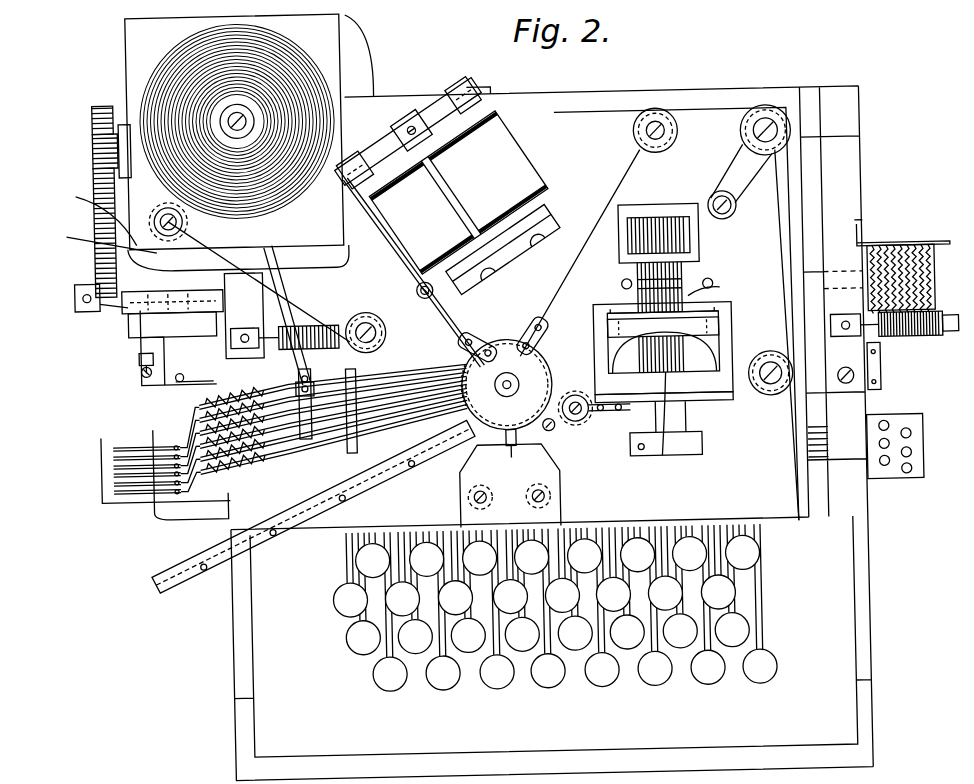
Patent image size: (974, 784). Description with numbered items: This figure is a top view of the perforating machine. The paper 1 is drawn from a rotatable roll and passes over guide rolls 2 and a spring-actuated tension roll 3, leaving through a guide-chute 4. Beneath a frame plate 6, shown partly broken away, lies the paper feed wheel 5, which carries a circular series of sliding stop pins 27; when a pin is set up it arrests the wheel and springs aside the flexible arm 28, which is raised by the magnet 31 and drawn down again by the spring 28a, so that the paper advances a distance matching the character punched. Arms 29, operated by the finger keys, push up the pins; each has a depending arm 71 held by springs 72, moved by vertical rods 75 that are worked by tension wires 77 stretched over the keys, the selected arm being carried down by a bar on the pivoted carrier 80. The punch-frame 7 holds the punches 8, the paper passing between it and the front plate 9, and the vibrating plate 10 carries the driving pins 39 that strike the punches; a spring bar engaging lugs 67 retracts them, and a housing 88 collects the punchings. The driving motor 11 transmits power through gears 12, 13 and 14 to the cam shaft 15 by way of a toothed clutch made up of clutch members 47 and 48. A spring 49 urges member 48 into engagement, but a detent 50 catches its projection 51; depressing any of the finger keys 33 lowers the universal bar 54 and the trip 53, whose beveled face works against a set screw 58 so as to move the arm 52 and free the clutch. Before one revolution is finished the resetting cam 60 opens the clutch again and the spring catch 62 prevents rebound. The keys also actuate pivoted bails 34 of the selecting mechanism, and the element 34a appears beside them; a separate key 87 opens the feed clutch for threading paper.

The paper 1 is at (292, 56).
The guide rolls 2 is at (186, 216).
The spring-actuated tension roll 3 is at (746, 136).
The guide-chute 4 is at (278, 526).
The paper feed wheel 5 is at (517, 444).
The frame plate 6 is at (503, 372).
The punch-frame 7 is at (722, 338).
The punches 8 is at (720, 281).
The front plate 9 is at (720, 405).
The vibrating plate 10 is at (702, 256).
The driving motor 11 is at (128, 118).
The gear 12 is at (98, 142).
The gear 13 is at (98, 108).
The gear 14 is at (80, 303).
The cam shaft 15 is at (310, 258).
The sliding stop pins 27 is at (494, 395).
The arm 28 is at (405, 278).
The spring 28a is at (420, 288).
The arms 29 is at (290, 350).
The magnet 31 is at (440, 177).
The finger keys 33 is at (350, 604).
The pivoted bails 34 is at (914, 346).
The spring 34a is at (896, 252).
The driving pins 39 is at (660, 256).
The clutch member 47 is at (98, 262).
The clutch member 48 is at (93, 239).
The spring 49 is at (80, 188).
The detent 50 is at (142, 340).
The projection 51 is at (173, 318).
The arm 52 is at (142, 360).
The trip 53 is at (145, 370).
The universal bar 54 is at (196, 376).
The set screw 58 is at (160, 350).
The resetting cam 60 is at (124, 312).
The spring catch 62 is at (672, 420).
The lugs 67 is at (640, 318).
The depending arms 71 is at (175, 505).
The springs 72 is at (215, 470).
The vertical rods 75 is at (130, 470).
The tension wires 77 is at (446, 472).
The pivoted carrier 80 is at (333, 409).
The key 87 is at (510, 596).
The housing 88 is at (656, 459).